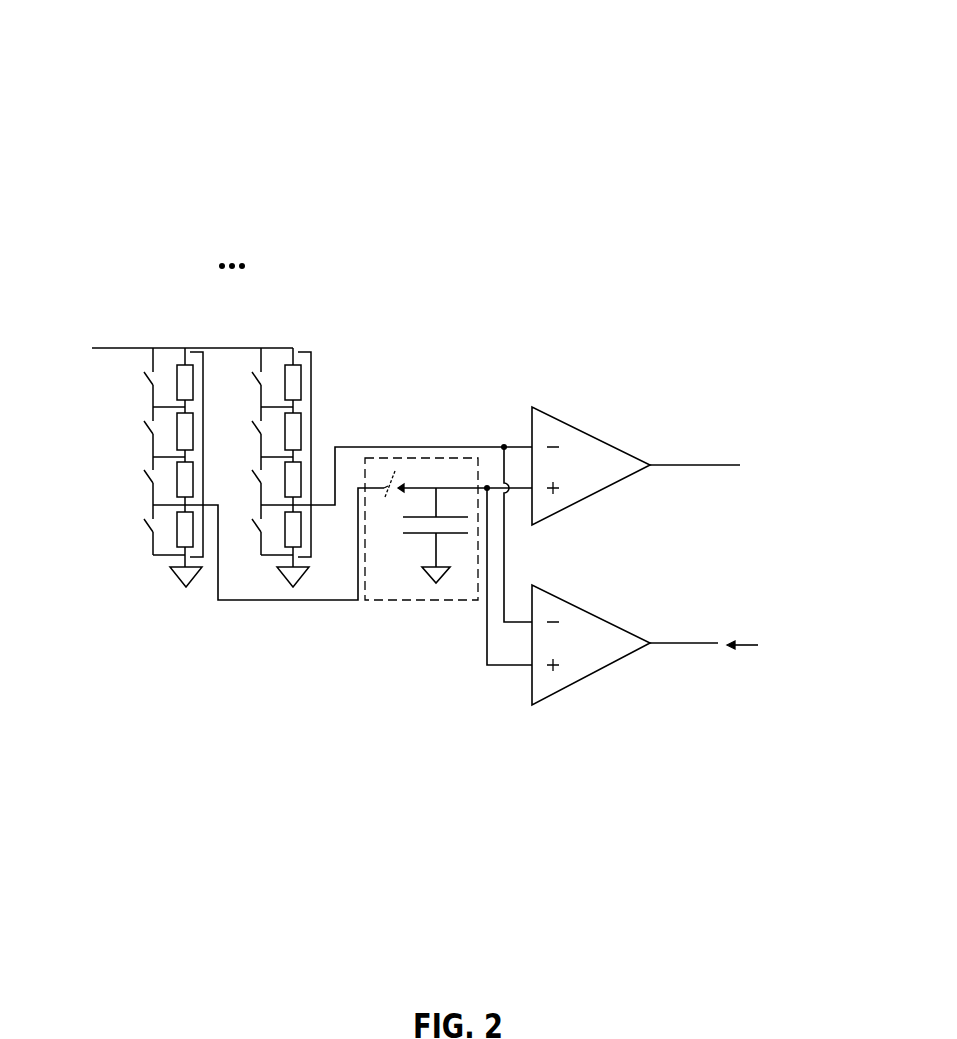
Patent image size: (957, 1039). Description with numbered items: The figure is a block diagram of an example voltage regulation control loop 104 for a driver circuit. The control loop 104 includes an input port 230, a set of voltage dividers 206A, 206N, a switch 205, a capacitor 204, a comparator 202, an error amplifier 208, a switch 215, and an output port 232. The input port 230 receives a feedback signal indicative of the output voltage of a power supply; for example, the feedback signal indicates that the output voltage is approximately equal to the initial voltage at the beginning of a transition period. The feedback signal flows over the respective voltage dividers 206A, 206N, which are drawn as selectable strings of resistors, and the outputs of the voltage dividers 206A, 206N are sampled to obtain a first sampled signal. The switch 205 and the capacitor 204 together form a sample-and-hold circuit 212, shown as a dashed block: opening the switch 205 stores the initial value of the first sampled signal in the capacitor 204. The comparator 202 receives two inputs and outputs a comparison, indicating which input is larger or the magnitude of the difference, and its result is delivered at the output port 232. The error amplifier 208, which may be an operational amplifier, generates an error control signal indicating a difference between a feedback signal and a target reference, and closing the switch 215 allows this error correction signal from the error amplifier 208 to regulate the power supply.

The control loop 104 is at (779, 72).
The comparator 202 is at (568, 424).
The capacitor 204 is at (425, 535).
The switch 205 is at (398, 477).
The voltage divider 206A is at (208, 455).
The voltage divider 206N is at (315, 453).
The error amplifier 208 is at (592, 614).
The S&H circuit 212 is at (383, 600).
The switch 215 is at (727, 636).
The input port 230 is at (92, 348).
The output port 232 is at (740, 465).